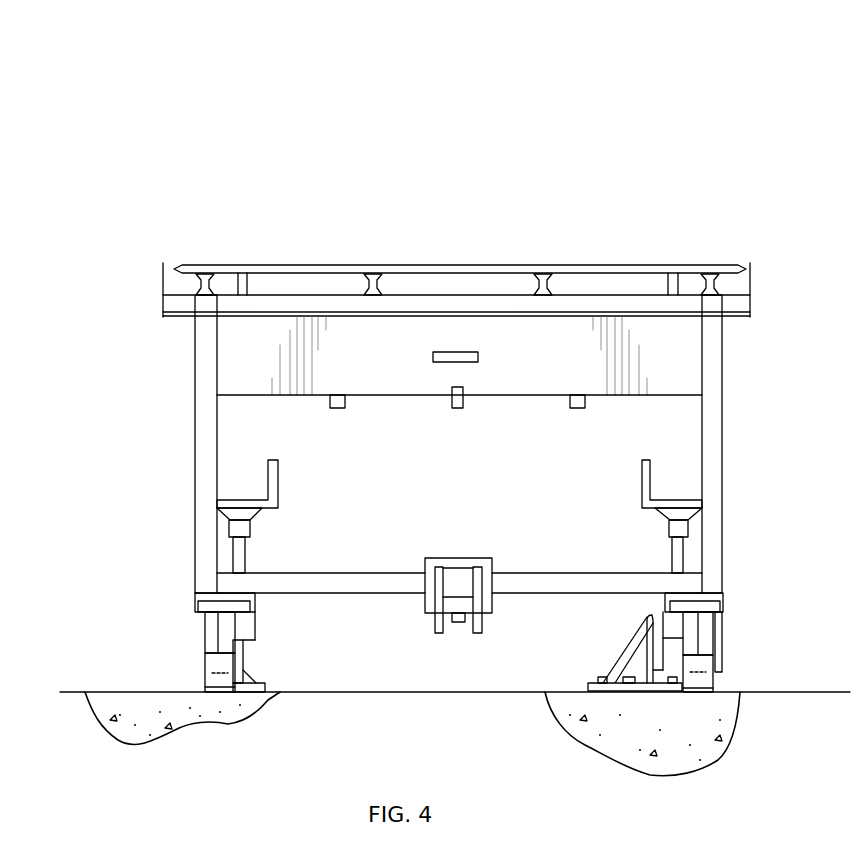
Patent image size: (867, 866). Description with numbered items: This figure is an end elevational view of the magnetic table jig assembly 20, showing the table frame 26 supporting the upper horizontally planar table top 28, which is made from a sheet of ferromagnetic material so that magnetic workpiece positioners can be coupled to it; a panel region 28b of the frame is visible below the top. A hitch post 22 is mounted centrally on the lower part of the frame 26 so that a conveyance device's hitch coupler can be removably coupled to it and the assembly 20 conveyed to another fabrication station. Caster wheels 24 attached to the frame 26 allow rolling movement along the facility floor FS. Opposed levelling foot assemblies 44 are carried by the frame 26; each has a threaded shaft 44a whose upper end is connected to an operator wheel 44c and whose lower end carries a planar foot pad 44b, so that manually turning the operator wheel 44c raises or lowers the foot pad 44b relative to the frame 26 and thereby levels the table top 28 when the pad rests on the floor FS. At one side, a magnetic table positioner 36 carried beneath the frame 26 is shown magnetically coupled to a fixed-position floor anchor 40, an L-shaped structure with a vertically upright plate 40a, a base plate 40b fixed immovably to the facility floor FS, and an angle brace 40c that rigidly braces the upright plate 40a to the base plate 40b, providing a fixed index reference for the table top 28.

The magnetic table jig assembly 20 is at (630, 115).
The hitch post 22 is at (462, 580).
The caster wheels 24 is at (208, 683).
The table frame 26 is at (205, 391).
The table top 28 is at (268, 263).
The table top panel 28b is at (397, 364).
The magnetic table positioner 36 is at (685, 624).
The floor anchor 40 is at (639, 650).
The upright plate 40a is at (675, 648).
The base plate 40b is at (617, 692).
The angle brace 40c is at (620, 667).
The levelling foot assembly 44 is at (251, 563).
The threaded shaft 44a is at (240, 553).
The foot pad 44b is at (255, 683).
The operator wheel 44c is at (252, 500).
The facility floor FS is at (113, 692).